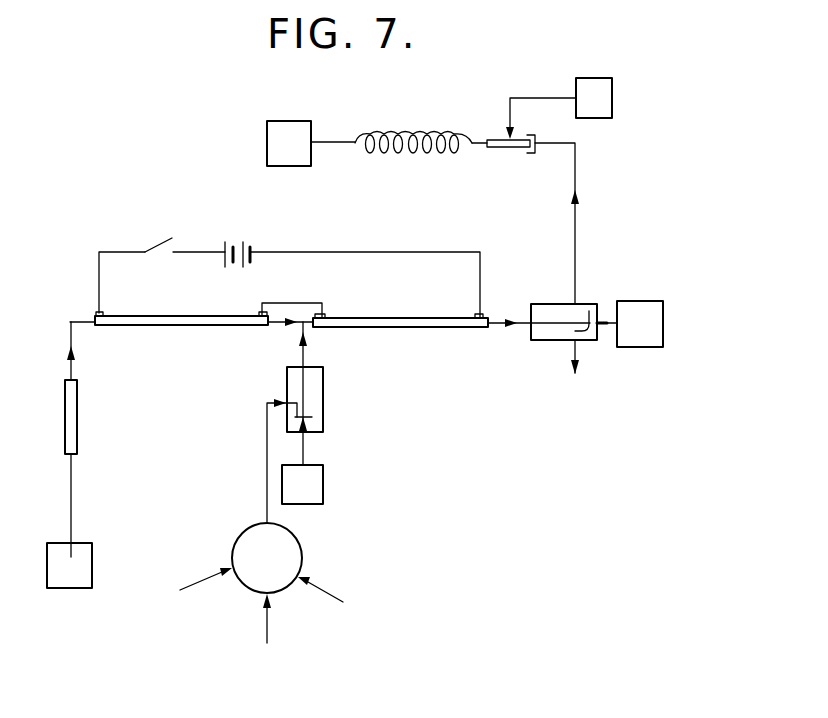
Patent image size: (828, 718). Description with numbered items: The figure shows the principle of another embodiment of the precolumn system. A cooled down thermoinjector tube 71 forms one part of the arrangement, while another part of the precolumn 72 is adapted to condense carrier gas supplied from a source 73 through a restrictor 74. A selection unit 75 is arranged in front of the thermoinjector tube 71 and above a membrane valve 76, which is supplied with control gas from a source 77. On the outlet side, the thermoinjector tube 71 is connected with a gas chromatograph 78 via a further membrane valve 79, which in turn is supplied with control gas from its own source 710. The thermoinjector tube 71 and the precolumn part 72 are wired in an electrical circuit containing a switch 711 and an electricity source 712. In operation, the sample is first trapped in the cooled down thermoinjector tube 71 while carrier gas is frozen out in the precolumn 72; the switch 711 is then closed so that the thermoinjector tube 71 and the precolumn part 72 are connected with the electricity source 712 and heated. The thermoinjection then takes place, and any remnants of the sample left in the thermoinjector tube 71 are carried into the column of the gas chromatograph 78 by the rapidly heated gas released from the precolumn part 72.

The thermoinjector tube 71 is at (385, 318).
The precolumn part 72 is at (163, 318).
The carrier gas source 73 is at (93, 568).
The restrictor 74 is at (77, 418).
The selection unit 75 is at (303, 558).
The membrane valve 76 is at (323, 390).
The control gas source 77 is at (323, 477).
The gas chromatograph 78 is at (419, 147).
The membrane valve 79 is at (580, 303).
The control gas source 710 is at (635, 298).
The switch 711 is at (160, 237).
The electricity source 712 is at (246, 237).